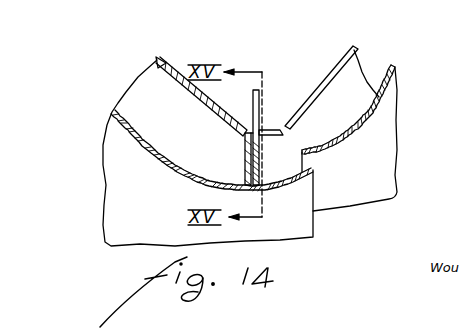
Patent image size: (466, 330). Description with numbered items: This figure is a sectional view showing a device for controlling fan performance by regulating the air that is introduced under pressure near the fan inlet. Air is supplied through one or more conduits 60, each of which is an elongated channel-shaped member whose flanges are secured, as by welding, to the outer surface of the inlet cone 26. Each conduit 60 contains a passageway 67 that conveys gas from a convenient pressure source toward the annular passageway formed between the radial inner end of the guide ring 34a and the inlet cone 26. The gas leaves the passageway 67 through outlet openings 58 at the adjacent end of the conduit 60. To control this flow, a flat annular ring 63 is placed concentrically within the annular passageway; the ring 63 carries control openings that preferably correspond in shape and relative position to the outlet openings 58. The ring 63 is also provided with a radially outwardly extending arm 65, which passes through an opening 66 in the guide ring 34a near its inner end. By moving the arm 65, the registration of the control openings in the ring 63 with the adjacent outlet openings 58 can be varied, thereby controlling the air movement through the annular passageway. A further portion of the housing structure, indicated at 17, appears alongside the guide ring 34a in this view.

The second body section 17 is at (382, 98).
The inlet cone 26 is at (189, 182).
The guide ring 34a is at (320, 92).
The outlet openings 58 is at (245, 150).
The conduit 60 is at (178, 63).
The annular ring 63 is at (262, 152).
The arm 65 is at (260, 90).
The opening 66 is at (266, 128).
The passageway 67 is at (158, 60).